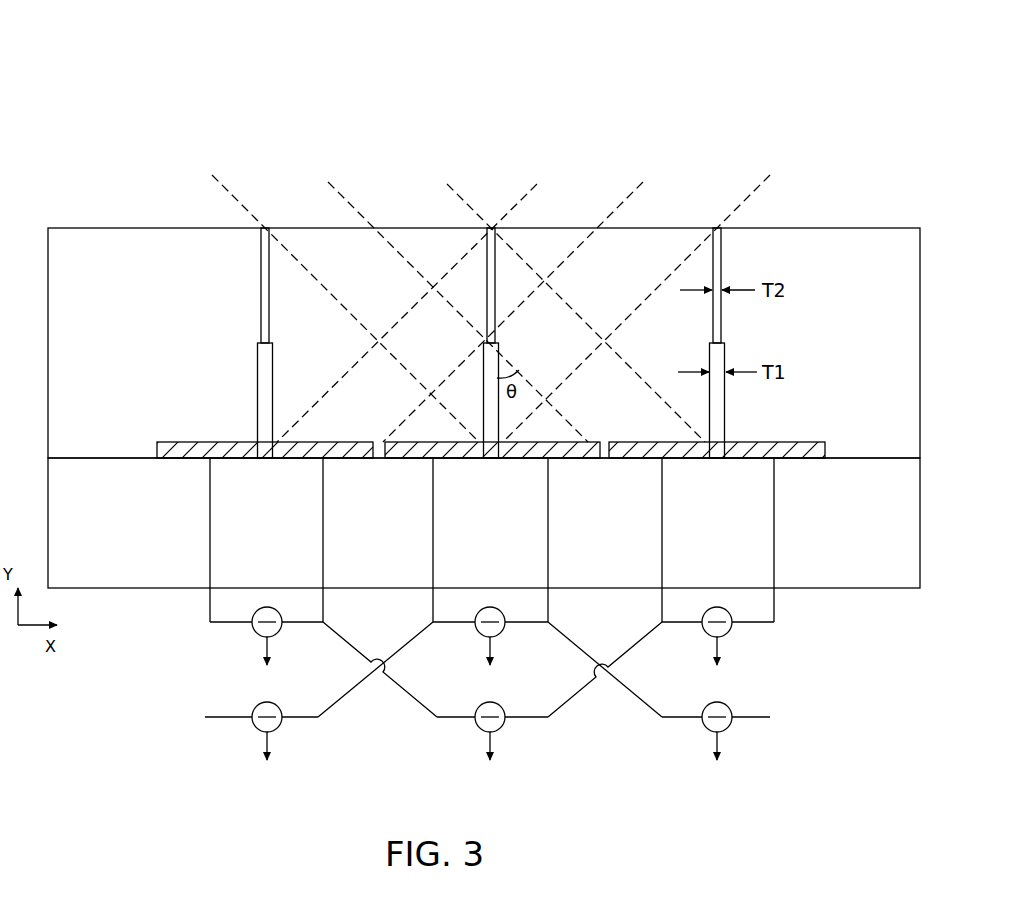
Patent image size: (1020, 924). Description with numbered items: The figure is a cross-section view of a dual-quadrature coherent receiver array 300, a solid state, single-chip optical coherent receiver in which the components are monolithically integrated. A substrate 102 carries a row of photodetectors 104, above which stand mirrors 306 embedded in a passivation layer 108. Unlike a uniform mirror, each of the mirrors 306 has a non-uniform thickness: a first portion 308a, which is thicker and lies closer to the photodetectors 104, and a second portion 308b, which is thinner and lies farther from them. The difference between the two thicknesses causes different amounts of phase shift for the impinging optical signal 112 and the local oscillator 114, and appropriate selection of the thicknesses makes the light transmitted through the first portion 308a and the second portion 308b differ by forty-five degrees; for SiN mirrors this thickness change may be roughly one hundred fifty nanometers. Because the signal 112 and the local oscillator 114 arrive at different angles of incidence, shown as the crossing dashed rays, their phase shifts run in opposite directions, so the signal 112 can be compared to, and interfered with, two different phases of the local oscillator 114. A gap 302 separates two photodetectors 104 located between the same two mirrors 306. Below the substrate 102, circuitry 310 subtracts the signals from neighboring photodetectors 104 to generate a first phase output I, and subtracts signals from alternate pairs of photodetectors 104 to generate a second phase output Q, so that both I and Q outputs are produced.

The coherent receiver array 300 is at (112, 78).
The passivation layer 108 is at (78, 240).
The substrate 102 is at (138, 580).
The photodetectors 104 is at (180, 440).
The gap 302 is at (383, 452).
The mirrors 306 is at (184, 330).
The first portion 308a is at (257, 346).
The second portion 308b is at (261, 258).
The signal 112 is at (320, 173).
The local oscillator 114 is at (660, 175).
The circuitry 310 is at (814, 695).